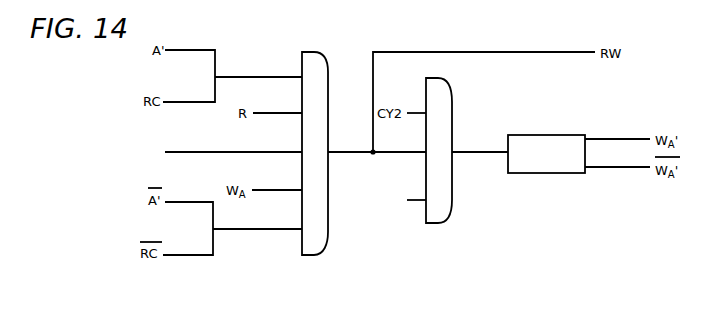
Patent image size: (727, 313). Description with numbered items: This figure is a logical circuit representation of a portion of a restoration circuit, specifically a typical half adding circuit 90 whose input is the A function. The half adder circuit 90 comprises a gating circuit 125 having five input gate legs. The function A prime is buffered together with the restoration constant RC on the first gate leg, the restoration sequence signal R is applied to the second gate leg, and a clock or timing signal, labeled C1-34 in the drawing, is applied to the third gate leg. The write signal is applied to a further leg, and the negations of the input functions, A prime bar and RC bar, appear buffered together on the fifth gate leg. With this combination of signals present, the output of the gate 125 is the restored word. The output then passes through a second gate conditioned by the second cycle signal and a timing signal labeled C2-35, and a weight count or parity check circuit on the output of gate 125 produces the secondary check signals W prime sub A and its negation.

The gating circuit 125 is at (320, 236).
The half adding circuit 90 is at (262, 240).
The control signal C1-34 line 34 is at (209, 151).
The control signal C2-35 line 35 is at (390, 200).